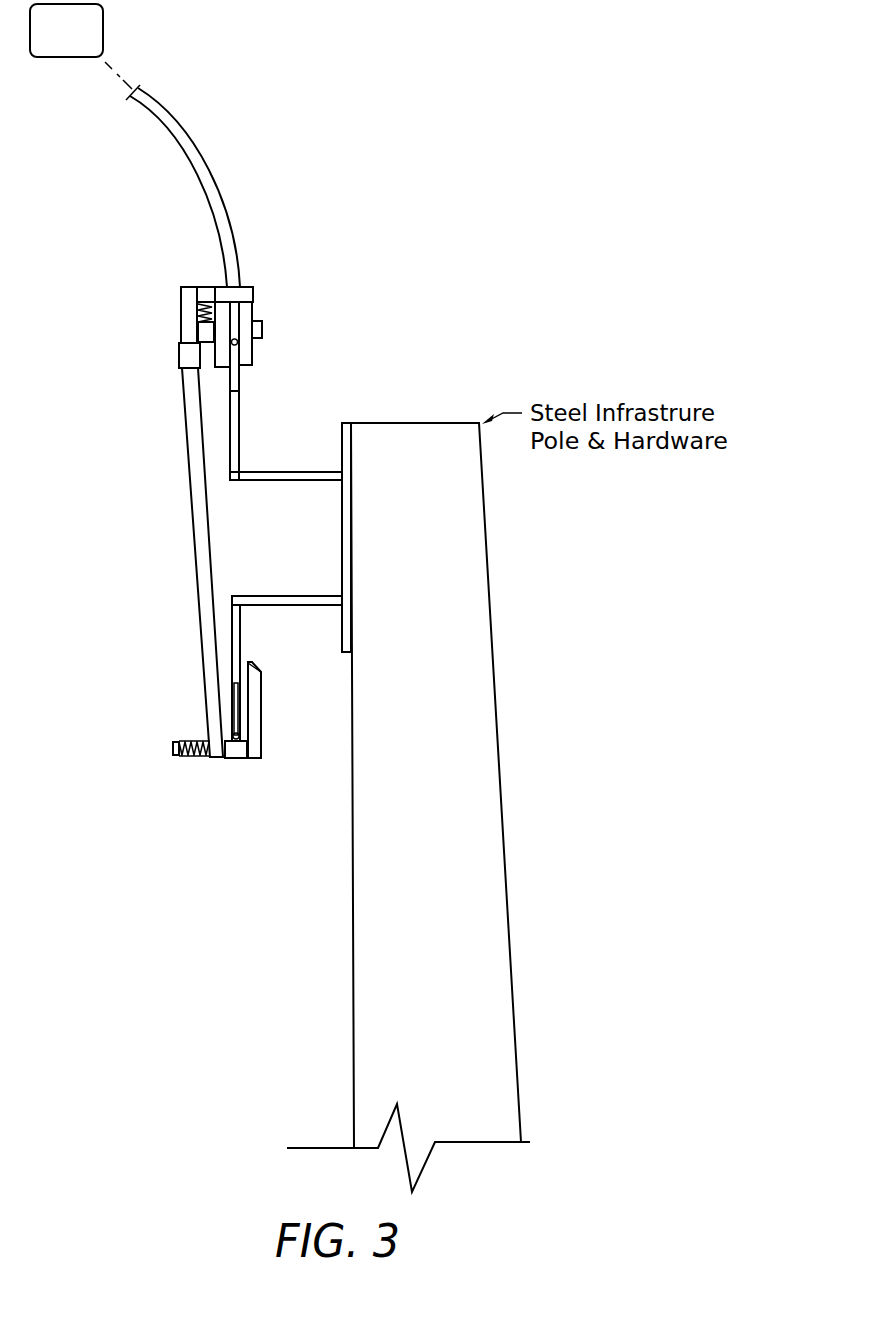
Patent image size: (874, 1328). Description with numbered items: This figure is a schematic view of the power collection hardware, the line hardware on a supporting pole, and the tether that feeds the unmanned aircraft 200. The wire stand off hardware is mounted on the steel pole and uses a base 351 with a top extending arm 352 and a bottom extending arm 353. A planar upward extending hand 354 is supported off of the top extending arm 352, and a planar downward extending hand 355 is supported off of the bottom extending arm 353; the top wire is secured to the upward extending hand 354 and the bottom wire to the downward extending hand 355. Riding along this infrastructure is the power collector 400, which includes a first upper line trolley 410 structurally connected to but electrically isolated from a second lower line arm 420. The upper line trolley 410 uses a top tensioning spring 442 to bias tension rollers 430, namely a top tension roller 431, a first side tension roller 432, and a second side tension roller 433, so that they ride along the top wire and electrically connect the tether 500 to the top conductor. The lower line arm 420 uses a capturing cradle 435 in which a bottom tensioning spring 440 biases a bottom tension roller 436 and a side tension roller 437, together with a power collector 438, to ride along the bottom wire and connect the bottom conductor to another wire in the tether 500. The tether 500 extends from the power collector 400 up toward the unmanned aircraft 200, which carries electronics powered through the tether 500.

The unmanned aircraft 200 is at (90, 46).
The tether 500 is at (187, 147).
The base 351 is at (351, 457).
The top extending arm 352 is at (303, 469).
The bottom extending arm 353 is at (303, 607).
The upward extending hand 354 is at (240, 438).
The downward extending hand 355 is at (228, 613).
The power collector 400 is at (182, 280).
The upper line trolley 410 is at (251, 279).
The lower line arm 420 is at (214, 763).
The tension rollers 430 is at (222, 370).
The top tension roller 431 is at (257, 293).
The first side tension roller 432 is at (216, 362).
The second side tension roller 433 is at (243, 366).
The capturing cradle 435 is at (255, 759).
The bottom tension roller 436 is at (238, 759).
The side tension roller 437 is at (262, 703).
The power collector 438 is at (192, 525).
The bottom tensioning spring 440 is at (181, 742).
The top tensioning spring 442 is at (200, 310).